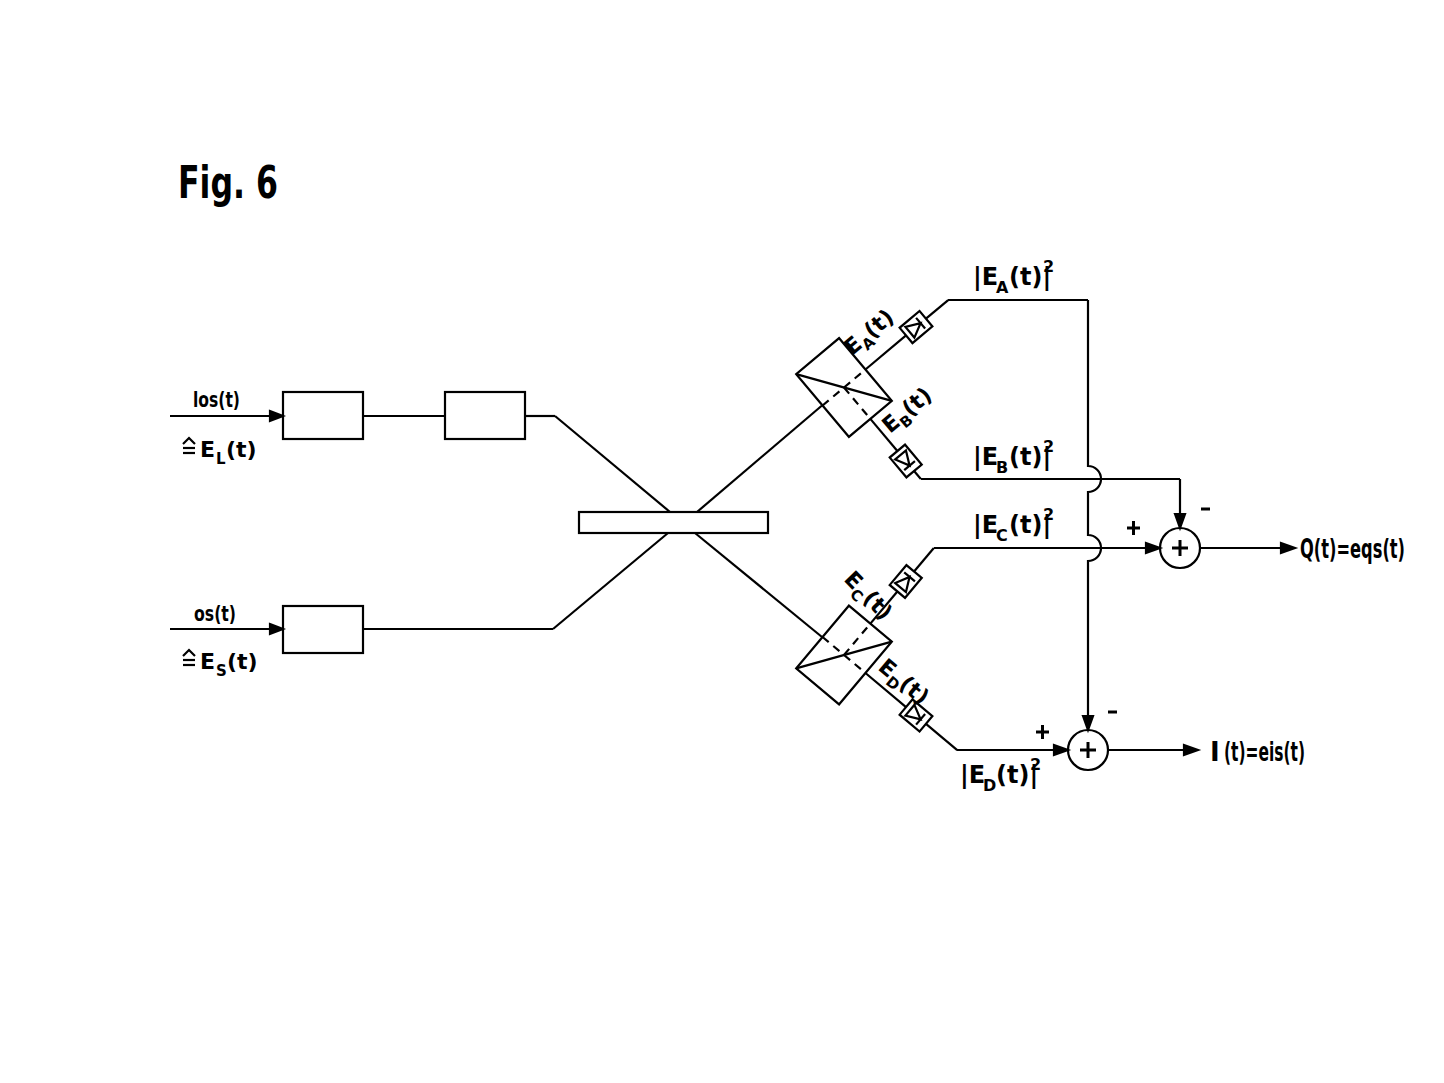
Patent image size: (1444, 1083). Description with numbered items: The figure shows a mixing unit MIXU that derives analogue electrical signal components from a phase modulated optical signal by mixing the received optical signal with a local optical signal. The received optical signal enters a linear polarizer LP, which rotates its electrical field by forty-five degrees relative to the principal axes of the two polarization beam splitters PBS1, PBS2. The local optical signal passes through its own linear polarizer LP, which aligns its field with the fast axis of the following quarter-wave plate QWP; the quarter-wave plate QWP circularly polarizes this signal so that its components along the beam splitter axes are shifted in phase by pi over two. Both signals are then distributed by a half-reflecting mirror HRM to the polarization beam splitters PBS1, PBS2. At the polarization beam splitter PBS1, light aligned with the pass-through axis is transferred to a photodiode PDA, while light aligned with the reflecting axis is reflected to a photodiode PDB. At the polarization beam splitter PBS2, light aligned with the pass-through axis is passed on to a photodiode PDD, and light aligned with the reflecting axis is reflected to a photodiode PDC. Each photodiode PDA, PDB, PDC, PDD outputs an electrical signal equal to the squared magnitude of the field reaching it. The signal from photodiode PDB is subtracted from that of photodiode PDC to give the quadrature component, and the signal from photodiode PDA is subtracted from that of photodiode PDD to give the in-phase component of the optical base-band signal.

The linear polarizer LP is at (323, 522).
The quarter-wave plate QWP is at (485, 415).
The mixing unit MIXU is at (613, 327).
The half-reflecting mirror HRM is at (579, 522).
The polarization beam splitter PBS1 is at (812, 360).
The polarization beam splitter PBS2 is at (815, 690).
The photodiode PDA is at (922, 345).
The photodiode PDB is at (893, 472).
The photodiode PDC is at (915, 597).
The photodiode PDD is at (903, 727).